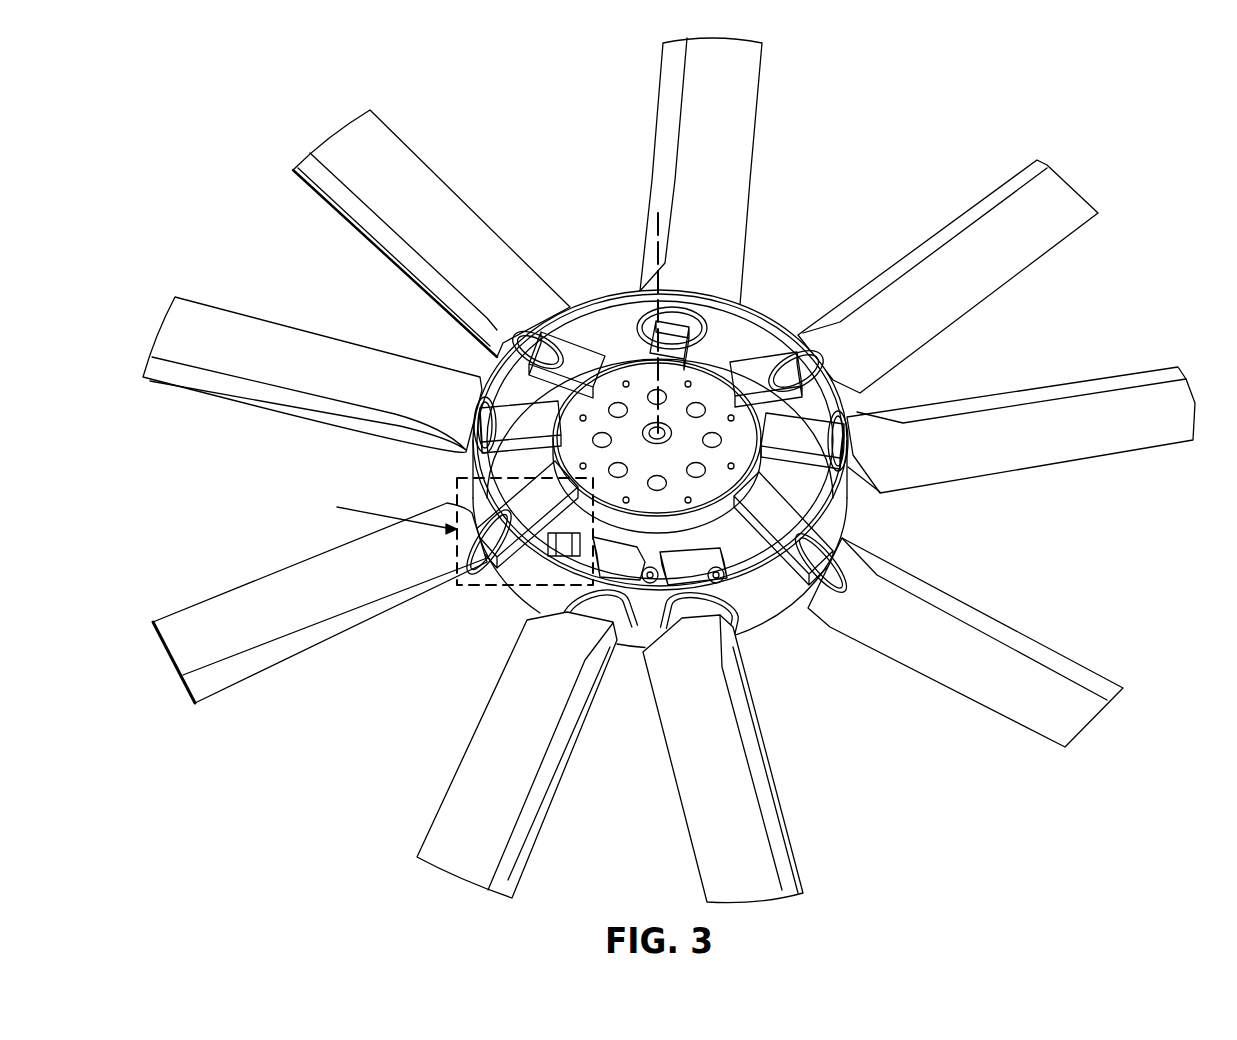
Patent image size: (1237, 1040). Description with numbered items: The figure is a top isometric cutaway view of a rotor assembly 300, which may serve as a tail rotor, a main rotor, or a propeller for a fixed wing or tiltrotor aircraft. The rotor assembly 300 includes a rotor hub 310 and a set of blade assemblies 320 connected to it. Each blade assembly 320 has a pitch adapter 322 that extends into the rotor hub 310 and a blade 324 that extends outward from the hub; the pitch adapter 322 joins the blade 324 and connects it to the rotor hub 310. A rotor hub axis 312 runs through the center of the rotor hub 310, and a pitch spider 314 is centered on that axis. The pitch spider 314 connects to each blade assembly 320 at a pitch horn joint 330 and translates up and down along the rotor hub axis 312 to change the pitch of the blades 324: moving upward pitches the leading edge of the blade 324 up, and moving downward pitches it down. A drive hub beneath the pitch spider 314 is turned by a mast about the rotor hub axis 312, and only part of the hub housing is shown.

The rotor assembly 300 is at (669, 470).
The rotor hub 310 is at (793, 337).
The rotor hub axis 312 is at (657, 223).
The pitch spider 314 is at (635, 383).
The blade assembly 320 is at (336, 592).
The pitch adapter 322 is at (522, 513).
The blade 324 is at (213, 610).
The pitch horn joint 330 is at (537, 563).